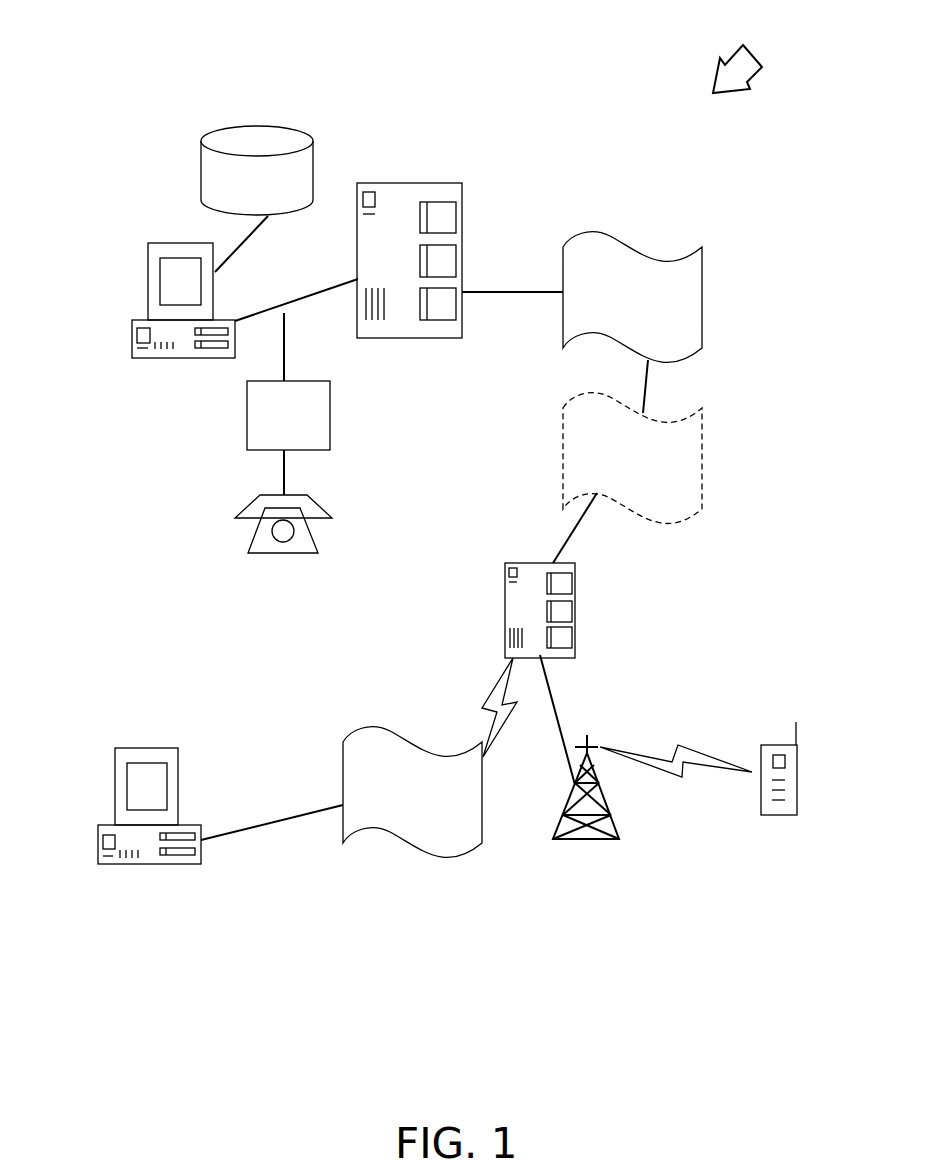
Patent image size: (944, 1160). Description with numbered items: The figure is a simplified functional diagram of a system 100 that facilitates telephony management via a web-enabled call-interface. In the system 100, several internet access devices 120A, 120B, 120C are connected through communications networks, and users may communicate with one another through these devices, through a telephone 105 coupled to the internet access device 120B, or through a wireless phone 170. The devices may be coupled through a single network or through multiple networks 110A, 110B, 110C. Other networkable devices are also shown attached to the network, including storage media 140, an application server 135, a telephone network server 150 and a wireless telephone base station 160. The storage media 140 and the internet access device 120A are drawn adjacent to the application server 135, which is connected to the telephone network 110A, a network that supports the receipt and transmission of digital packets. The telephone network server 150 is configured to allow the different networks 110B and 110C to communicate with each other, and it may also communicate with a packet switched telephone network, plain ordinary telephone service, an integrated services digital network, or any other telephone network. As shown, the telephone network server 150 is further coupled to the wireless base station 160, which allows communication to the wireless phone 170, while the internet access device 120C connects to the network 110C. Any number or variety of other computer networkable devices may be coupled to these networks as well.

The system 100 is at (761, 47).
The telephone 105 is at (283, 565).
The telephone network 110A is at (640, 230).
The network 110B is at (552, 469).
The network 110C is at (342, 748).
The internet access device 120A is at (130, 298).
The internet access device 120B is at (232, 415).
The internet access device 120C is at (143, 888).
The application server 135 is at (440, 175).
The storage media 140 is at (273, 113).
The telephone network server 150 is at (587, 618).
The wireless telephone base station 160 is at (583, 723).
The wireless phone 170 is at (773, 825).